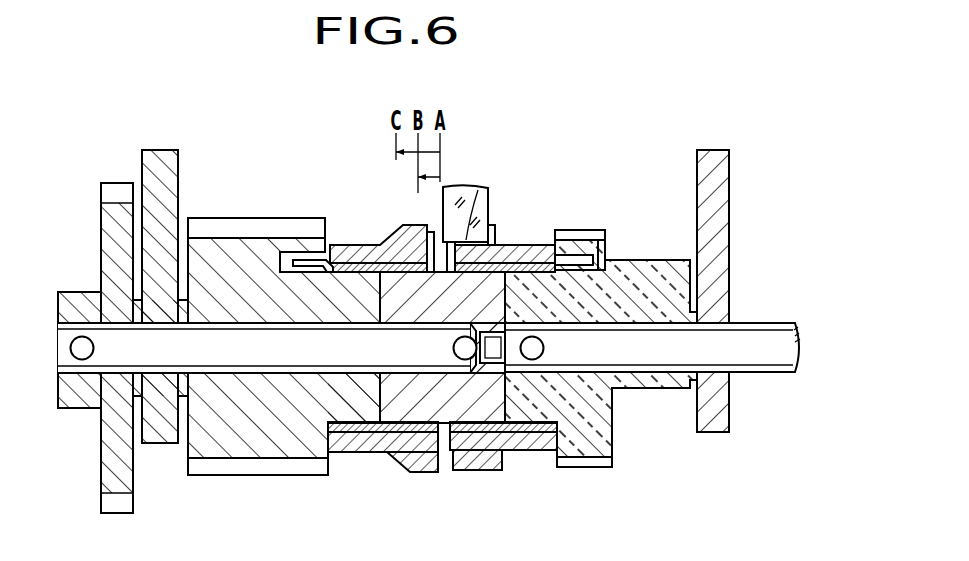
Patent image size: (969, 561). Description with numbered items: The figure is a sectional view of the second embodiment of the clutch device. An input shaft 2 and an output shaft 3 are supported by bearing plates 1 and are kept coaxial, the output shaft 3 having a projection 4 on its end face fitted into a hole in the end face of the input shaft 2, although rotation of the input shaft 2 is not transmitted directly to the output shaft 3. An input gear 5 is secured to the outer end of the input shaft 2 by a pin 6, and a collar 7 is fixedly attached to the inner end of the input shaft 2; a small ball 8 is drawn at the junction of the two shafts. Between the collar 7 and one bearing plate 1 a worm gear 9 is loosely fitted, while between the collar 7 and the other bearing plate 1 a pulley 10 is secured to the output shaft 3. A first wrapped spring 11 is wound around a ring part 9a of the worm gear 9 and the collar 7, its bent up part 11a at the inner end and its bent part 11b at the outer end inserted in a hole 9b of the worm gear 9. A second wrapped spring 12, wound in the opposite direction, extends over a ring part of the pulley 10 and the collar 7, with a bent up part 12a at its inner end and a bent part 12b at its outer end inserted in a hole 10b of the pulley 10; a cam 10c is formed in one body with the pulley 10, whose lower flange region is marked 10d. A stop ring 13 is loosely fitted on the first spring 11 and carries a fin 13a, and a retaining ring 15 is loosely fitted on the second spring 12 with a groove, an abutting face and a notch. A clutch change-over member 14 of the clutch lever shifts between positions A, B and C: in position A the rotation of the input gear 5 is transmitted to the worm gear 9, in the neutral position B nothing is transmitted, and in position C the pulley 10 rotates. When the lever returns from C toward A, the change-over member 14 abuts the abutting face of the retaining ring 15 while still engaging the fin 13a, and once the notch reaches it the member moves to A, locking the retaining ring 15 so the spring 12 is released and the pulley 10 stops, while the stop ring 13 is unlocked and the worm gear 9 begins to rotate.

The bearing plate 1 is at (168, 158).
The input shaft 2 is at (107, 357).
The output shaft 3 is at (762, 332).
The projection 4 is at (492, 352).
The input gear 5 is at (112, 477).
The pin 6 is at (82, 342).
The collar 7 is at (447, 405).
The ball 8 is at (454, 348).
The worm gear 9 is at (247, 448).
The ring part 9a is at (360, 407).
The hole 9b is at (287, 255).
The pulley 10 is at (635, 270).
The hole 10b is at (593, 256).
The cam 10c is at (668, 388).
The lower flange of second bearing body 10d is at (550, 450).
The first wrapped spring 11 is at (353, 258).
The bent up part 11a is at (427, 238).
The bent part 11b is at (306, 262).
The second wrapped spring 12 is at (512, 263).
The bent up part 12a is at (452, 238).
The bent part 12b is at (568, 252).
The stop ring 13 is at (371, 445).
The fin 13a is at (422, 466).
The clutch change-over member 14 is at (460, 188).
The retaining ring 15 is at (536, 262).